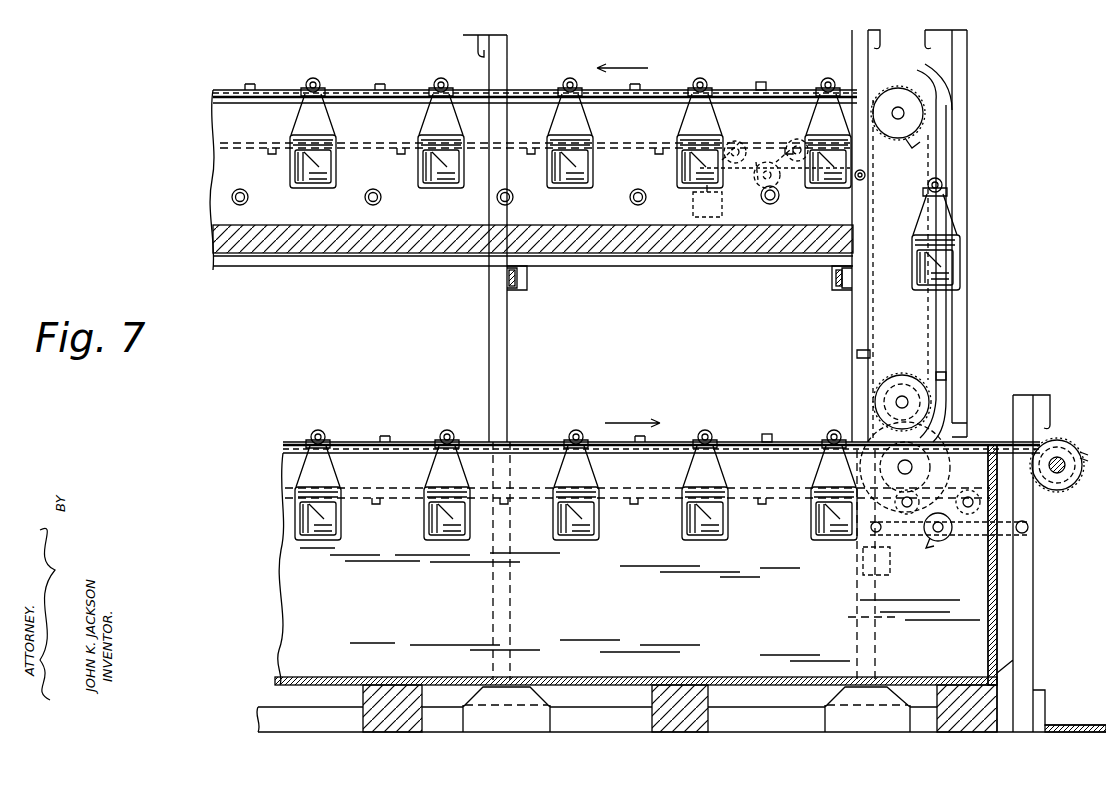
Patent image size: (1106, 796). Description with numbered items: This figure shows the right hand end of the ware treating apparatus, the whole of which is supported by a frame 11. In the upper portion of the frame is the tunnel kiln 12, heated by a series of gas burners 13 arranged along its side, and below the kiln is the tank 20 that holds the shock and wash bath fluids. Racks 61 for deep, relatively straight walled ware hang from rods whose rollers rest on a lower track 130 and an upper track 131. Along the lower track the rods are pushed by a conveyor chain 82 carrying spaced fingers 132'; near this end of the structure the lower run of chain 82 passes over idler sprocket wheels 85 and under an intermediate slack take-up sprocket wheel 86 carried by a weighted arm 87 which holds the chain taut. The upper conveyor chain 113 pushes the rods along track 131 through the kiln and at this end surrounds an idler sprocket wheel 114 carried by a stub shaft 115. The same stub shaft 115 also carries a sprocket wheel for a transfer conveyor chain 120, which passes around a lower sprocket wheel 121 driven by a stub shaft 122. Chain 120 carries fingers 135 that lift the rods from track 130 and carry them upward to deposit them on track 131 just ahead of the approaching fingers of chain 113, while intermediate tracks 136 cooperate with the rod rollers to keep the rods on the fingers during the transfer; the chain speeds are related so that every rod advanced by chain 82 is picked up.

The frame 11 is at (518, 353).
The tunnel kiln 12 is at (233, 240).
The gas burners 13 is at (250, 200).
The tank 20 is at (277, 655).
The rack 61 is at (285, 525).
The chain 82 is at (532, 440).
The idler sprocket wheels 85 is at (1028, 515).
The slack take-up sprocket wheel 86 is at (940, 540).
The weighted arm 87 is at (905, 528).
The conveyor chain 113 is at (666, 90).
The idler sprocket wheels 114 is at (913, 103).
The stub shaft 115 is at (898, 107).
The conveyor chain 120 is at (928, 310).
The lower transfer sprocket 121 is at (904, 375).
The stub shaft 122 is at (896, 398).
The track 130 is at (340, 450).
The track 131 is at (212, 90).
The finger 132' is at (773, 249).
The fingers 135 is at (860, 346).
The intermediate tracks 136 is at (950, 340).